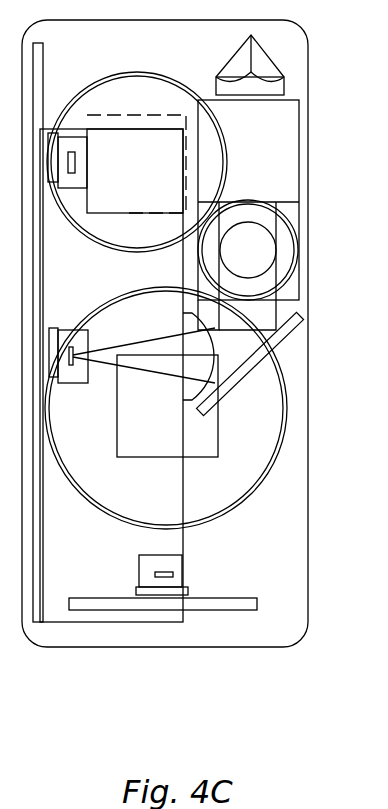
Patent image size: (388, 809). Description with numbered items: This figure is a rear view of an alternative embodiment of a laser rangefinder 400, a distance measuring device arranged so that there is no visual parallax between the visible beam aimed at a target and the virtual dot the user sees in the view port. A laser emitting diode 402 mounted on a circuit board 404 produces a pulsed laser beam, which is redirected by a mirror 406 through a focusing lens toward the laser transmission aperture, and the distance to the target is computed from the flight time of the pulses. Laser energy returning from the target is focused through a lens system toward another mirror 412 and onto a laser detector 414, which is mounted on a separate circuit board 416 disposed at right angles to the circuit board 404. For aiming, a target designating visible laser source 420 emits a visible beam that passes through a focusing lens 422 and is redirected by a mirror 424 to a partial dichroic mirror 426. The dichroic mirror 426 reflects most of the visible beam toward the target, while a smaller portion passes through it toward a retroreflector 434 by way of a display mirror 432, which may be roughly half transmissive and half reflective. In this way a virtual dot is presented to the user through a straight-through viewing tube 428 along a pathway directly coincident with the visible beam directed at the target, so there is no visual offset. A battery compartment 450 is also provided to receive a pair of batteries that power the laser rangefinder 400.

The laser rangefinder 400 is at (192, 722).
The laser emitting diode 402 is at (70, 190).
The circuit board 404 is at (43, 51).
The mirror 406 is at (117, 114).
The mirror 412 is at (152, 458).
The laser detector 414 is at (183, 559).
The circuit board 416 is at (245, 598).
The visible laser source 420 is at (68, 330).
The focusing lens 422 is at (184, 407).
The mirror 424 is at (300, 330).
The dichroic mirror 426 is at (299, 287).
The viewing tube 428 is at (284, 210).
The display mirror 432 is at (299, 113).
The retroreflector 434 is at (275, 65).
The battery compartment 450 is at (98, 622).